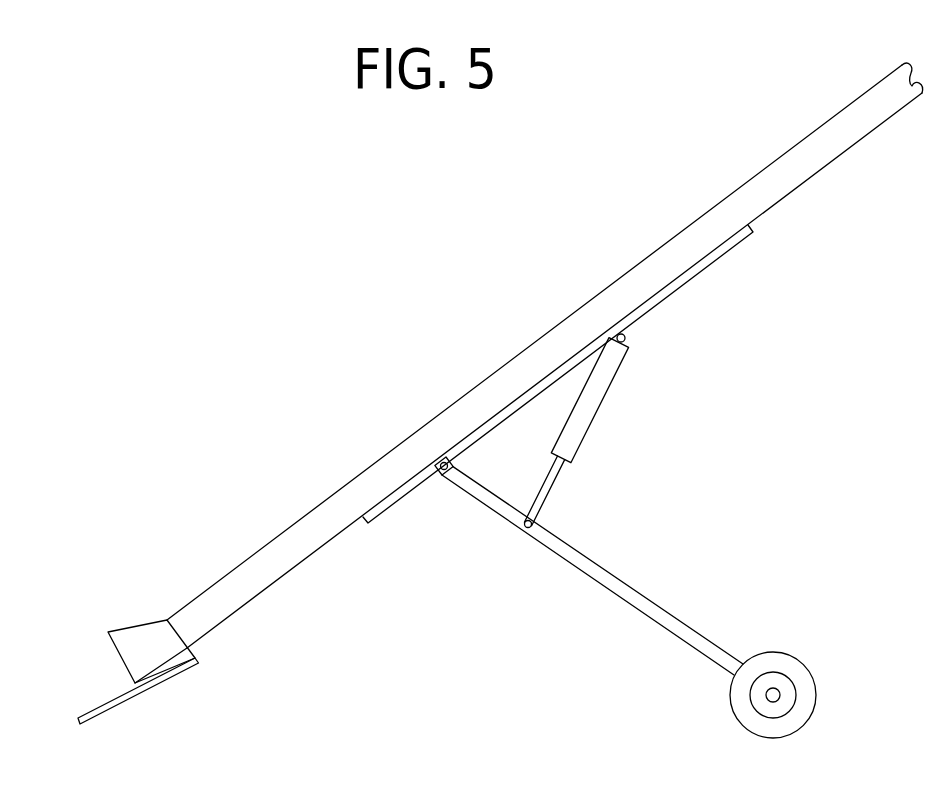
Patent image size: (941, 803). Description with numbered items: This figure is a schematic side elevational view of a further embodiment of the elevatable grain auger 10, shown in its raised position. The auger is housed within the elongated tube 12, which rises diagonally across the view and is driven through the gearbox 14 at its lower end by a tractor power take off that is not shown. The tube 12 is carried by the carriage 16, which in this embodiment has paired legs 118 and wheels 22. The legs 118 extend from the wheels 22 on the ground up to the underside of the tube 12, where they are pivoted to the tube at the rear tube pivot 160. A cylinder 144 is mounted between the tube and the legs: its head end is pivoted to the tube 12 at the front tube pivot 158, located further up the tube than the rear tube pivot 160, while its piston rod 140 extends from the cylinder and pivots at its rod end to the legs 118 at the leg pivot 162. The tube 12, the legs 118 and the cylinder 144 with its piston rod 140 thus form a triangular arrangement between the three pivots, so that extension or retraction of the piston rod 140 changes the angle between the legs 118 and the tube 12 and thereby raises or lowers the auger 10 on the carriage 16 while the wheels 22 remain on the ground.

The elevatable grain auger 10 is at (298, 495).
The elongated tube 12 is at (298, 553).
The gearbox 14 is at (137, 649).
The carriage 16 is at (625, 624).
The wheels 22 is at (795, 668).
The paired legs 118 is at (608, 582).
The piston rod 140 is at (552, 480).
The cylinder 144 is at (593, 400).
The front tube pivot 158 is at (626, 337).
The rear tube pivot 160 is at (442, 477).
The leg pivot 162 is at (527, 530).